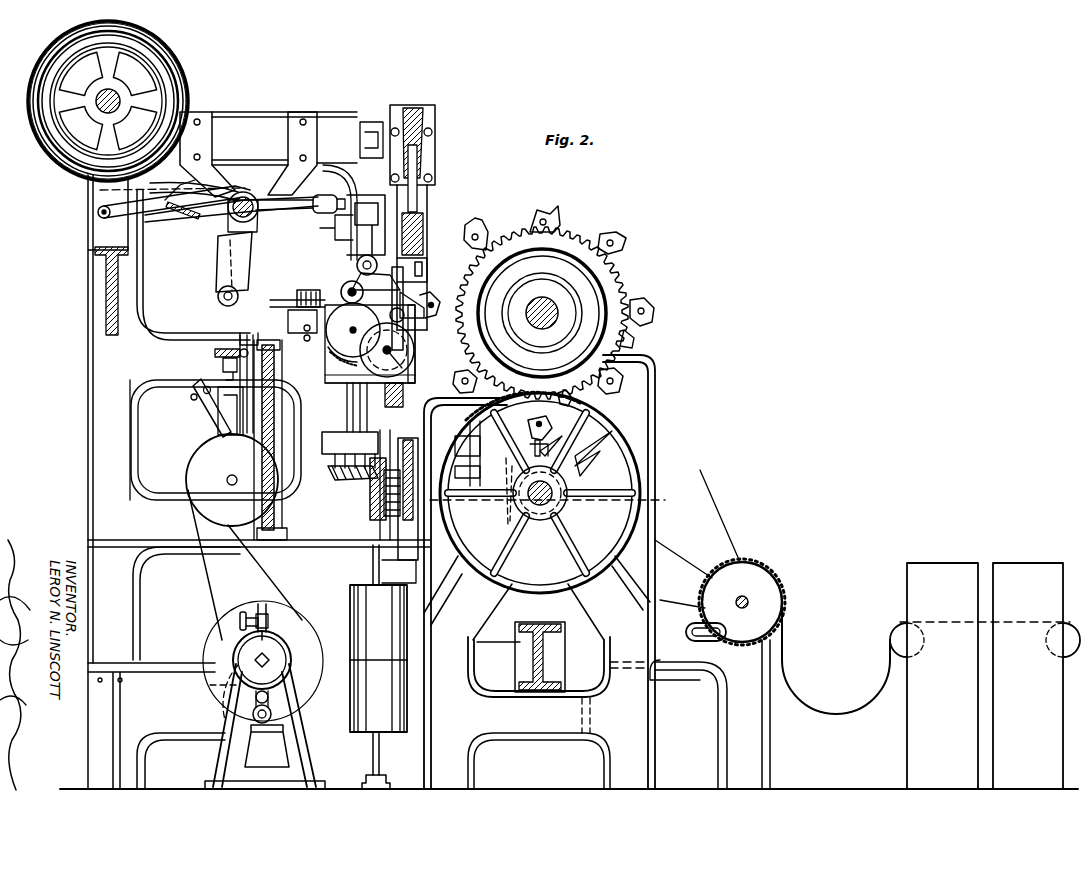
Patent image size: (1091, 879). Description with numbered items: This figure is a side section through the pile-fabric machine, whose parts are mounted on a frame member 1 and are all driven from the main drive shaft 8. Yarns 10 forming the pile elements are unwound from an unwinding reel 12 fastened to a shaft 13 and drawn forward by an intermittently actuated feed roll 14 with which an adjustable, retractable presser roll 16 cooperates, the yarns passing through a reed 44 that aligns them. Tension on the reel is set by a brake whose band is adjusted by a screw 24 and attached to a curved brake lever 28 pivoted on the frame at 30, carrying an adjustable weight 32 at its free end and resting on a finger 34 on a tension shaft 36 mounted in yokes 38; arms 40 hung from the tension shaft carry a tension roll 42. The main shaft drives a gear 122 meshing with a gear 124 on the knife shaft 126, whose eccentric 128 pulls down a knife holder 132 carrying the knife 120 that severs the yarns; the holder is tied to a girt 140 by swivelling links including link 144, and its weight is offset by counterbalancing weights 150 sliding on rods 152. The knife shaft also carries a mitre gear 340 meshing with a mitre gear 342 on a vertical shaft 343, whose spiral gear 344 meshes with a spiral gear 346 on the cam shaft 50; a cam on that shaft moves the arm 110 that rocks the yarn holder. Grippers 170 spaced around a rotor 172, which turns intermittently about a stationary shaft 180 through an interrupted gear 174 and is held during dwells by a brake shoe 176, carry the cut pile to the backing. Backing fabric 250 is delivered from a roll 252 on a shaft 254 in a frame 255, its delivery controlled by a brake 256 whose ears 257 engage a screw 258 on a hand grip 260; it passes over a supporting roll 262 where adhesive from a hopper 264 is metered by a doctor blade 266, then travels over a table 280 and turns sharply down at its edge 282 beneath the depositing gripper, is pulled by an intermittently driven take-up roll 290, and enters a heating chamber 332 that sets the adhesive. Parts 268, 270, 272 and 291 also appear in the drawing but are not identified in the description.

The frame member 1 is at (645, 369).
The main drive shaft 8 is at (540, 508).
The yarns 10 is at (175, 67).
The unwinding reel 12 is at (62, 166).
The shaft 13 is at (96, 101).
The feed roll 14 is at (335, 305).
The presser roll 16 is at (352, 285).
The screw 24 is at (190, 212).
The brake lever 28 is at (148, 222).
The pivot 30 is at (97, 212).
The adjustable weight 32 is at (322, 210).
The finger 34 is at (282, 210).
The tension shaft 36 is at (228, 232).
The yoke 38 is at (298, 136).
The arms 40 is at (252, 262).
The tension roll 42 is at (223, 300).
The reed 44 is at (298, 292).
The cam shaft 50 is at (412, 352).
The arm 110 is at (408, 329).
The knife 120 is at (424, 268).
The gear 122 is at (645, 484).
The gear 124 is at (546, 502).
The knife shaft 126 is at (480, 453).
The eccentric 128 is at (416, 455).
The knife holder 132 is at (420, 232).
The girt 140 is at (430, 118).
The link 144 is at (432, 176).
The counterbalancing weight 150 is at (386, 583).
The rod 152 is at (380, 760).
The gripper 170 is at (481, 228).
The rotor 172 is at (642, 300).
The interrupted gear 174 is at (632, 336).
The brake shoe 176 is at (630, 438).
The stationary shaft 180 is at (555, 302).
The fabric 250 is at (248, 562).
The roll 252 is at (206, 650).
The shaft 254 is at (254, 655).
The frame 255 is at (308, 766).
The brake 256 is at (250, 705).
The ears 257 is at (264, 605).
The screw 258 is at (270, 624).
The hand grip 260 is at (238, 612).
The supporting roll 262 is at (190, 480).
The hopper 264 is at (210, 420).
The doctor blade 266 is at (280, 418).
The stop 268 is at (220, 371).
The screw 270 is at (218, 351).
The bracket 272 is at (242, 340).
The table 280 is at (540, 438).
The edge 282 is at (565, 453).
The take-up roll 290 is at (778, 586).
The roller shaft 291 is at (737, 591).
The heating chamber 332 is at (942, 566).
The mitre gear 340 is at (365, 500).
The mitre gear 342 is at (362, 472).
The vertical shaft 343 is at (350, 400).
The spiral gear 344 is at (335, 350).
The spiral gear 346 is at (415, 380).